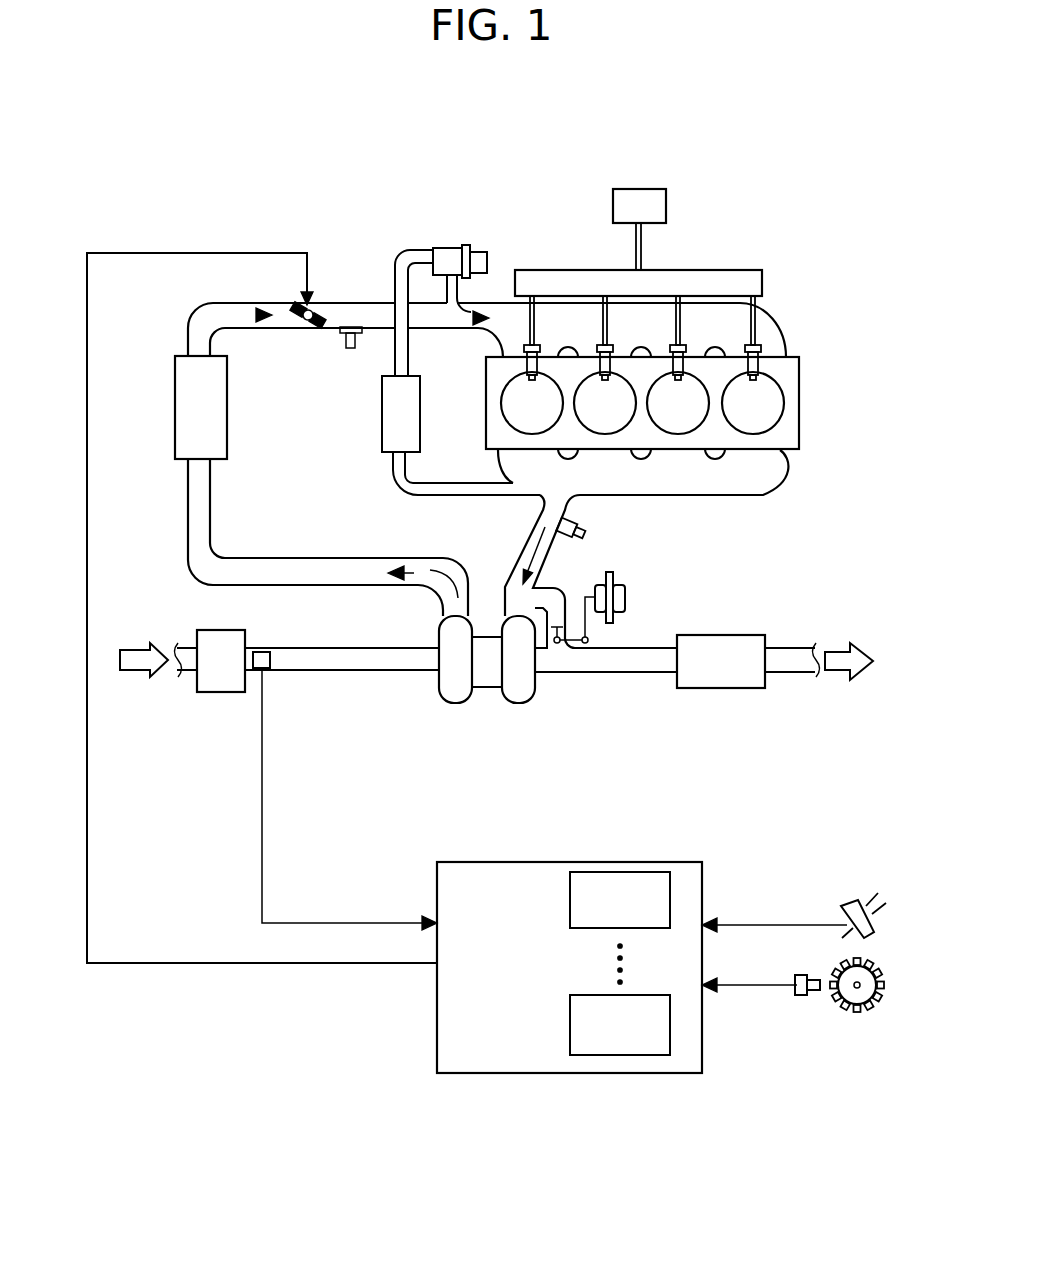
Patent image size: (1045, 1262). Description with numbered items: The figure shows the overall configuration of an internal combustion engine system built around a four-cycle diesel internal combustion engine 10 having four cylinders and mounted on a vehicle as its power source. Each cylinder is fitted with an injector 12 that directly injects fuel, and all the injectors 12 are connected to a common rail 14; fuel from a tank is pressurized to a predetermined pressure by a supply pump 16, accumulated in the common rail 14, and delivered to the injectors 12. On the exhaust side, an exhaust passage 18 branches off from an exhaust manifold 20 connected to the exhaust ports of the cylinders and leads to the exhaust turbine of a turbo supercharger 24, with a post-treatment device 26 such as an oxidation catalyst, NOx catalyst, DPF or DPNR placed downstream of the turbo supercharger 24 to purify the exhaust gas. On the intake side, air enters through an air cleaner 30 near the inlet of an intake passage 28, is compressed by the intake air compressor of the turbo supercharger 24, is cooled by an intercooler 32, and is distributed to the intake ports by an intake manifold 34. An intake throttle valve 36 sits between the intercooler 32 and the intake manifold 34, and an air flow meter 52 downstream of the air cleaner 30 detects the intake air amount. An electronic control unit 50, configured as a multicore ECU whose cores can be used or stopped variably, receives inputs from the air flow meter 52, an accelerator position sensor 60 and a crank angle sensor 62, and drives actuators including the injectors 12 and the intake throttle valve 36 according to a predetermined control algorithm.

The internal combustion engine 10 is at (812, 397).
The injectors 12 is at (778, 357).
The common rail 14 is at (732, 270).
The supply pump 16 is at (650, 189).
The exhaust passage 18 is at (636, 673).
The exhaust manifold 20 is at (763, 490).
The turbo supercharger 24 is at (452, 705).
The post-treatment device 26 is at (752, 635).
The intake passage 28 is at (338, 303).
The air cleaner 30 is at (205, 632).
The intercooler 32 is at (228, 411).
The intake manifold 34 is at (768, 316).
The intake throttle valve 36 is at (293, 308).
The electronic control unit 50 is at (472, 862).
The air flow meter 52 is at (262, 652).
The accelerator position sensor 60 is at (843, 920).
The crank angle sensor 62 is at (793, 980).